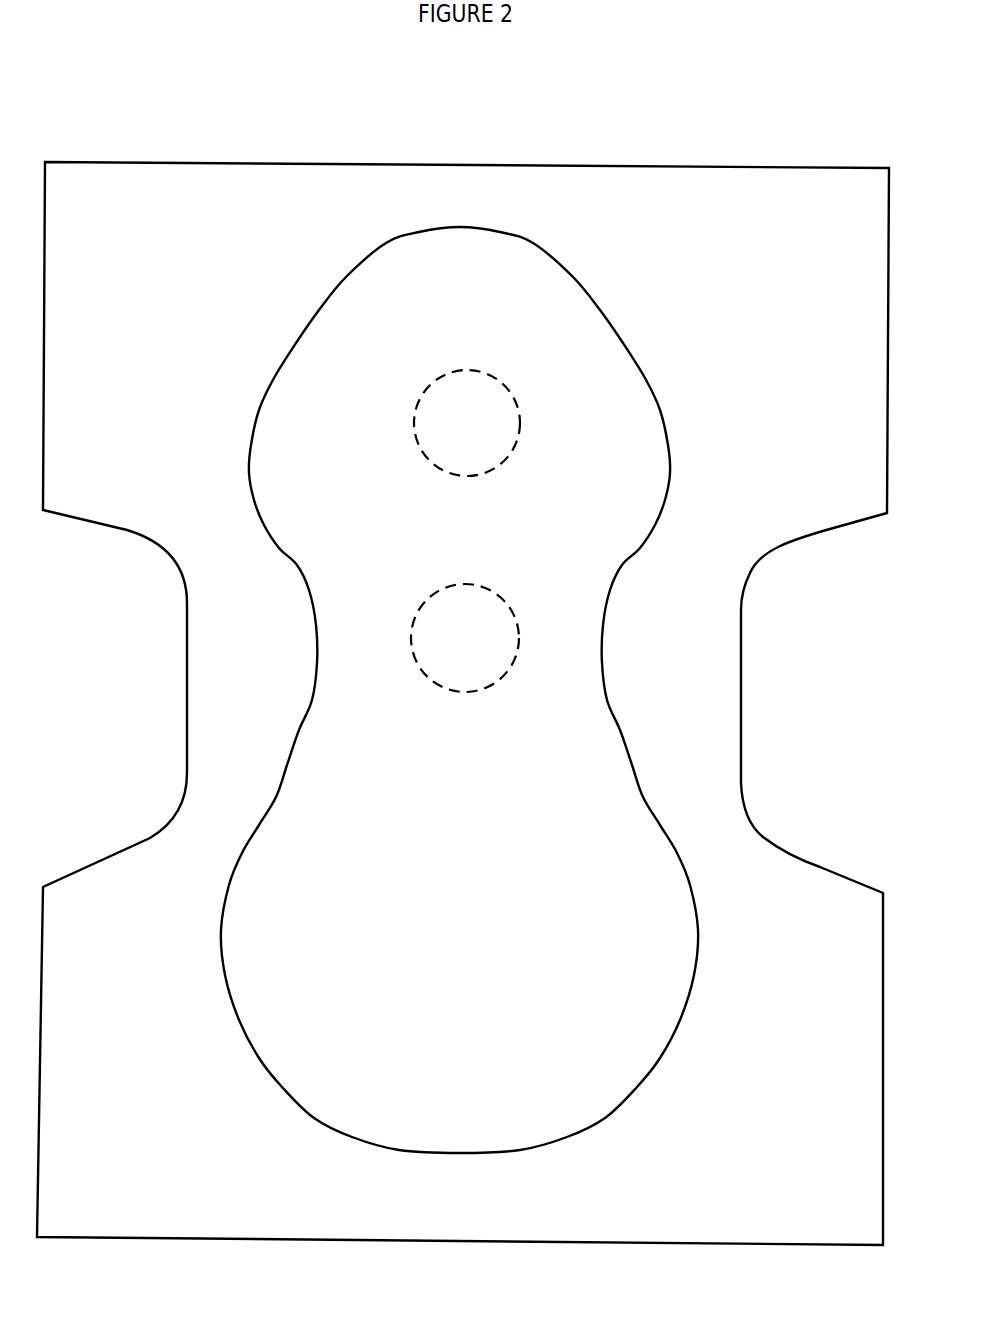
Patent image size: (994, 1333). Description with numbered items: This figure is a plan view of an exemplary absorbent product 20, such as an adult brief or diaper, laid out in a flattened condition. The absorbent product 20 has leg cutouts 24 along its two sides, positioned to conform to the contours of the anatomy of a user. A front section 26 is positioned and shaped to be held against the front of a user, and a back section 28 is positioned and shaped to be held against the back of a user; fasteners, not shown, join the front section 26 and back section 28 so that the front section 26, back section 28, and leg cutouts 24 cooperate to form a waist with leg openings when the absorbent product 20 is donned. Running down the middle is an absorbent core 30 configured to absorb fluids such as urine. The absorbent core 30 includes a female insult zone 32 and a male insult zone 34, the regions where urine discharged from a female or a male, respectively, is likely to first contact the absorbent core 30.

The absorbent product 20 is at (619, 145).
The leg cutouts 24 is at (114, 670).
The front section 26 is at (757, 338).
The back section 28 is at (794, 1068).
The absorbent core 30 is at (477, 938).
The female insult zone 32 is at (481, 654).
The male insult zone 34 is at (481, 438).